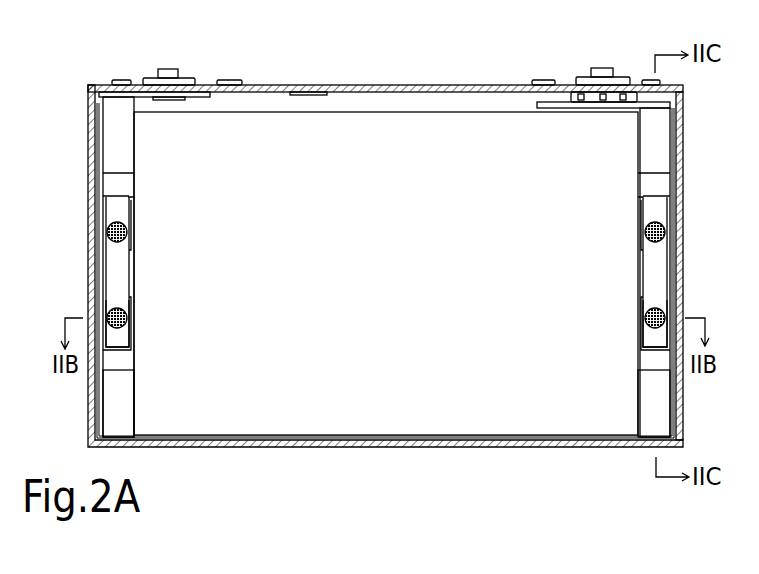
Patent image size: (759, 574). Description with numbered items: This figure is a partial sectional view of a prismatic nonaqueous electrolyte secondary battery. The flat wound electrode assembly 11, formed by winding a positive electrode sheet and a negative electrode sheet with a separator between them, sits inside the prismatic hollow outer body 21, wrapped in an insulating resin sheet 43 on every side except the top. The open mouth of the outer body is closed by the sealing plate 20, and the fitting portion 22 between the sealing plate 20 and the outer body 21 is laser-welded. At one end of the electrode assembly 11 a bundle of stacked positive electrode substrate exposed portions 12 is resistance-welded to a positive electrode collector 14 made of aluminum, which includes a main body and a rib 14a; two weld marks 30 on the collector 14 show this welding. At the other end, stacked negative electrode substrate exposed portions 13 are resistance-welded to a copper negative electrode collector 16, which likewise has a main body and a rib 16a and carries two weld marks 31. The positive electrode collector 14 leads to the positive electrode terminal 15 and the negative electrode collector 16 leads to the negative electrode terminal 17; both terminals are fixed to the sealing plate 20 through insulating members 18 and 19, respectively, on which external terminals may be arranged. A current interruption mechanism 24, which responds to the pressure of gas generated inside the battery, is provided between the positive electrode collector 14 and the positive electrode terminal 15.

The flat wound electrode assembly 11 is at (413, 387).
The positive electrode substrate exposed portions 12 is at (650, 405).
The negative electrode substrate exposed portions 13 is at (123, 402).
The positive electrode collector 14 is at (708, 135).
The rib 14a is at (642, 318).
The positive electrode terminal 15 is at (592, 69).
The negative electrode collector 16 is at (118, 270).
The rib 16a is at (128, 318).
The negative electrode terminal 17 is at (163, 73).
The insulating member 18 is at (575, 80).
The insulating member 19 is at (200, 120).
The sealing plate 20 is at (425, 85).
The prismatic hollow outer body 21 is at (680, 165).
The fitting portion 22 is at (92, 85).
The current interruption mechanism 24 is at (588, 101).
The weld marks 30 is at (655, 318).
The weld marks 31 is at (115, 318).
The resin sheet 43 is at (495, 440).